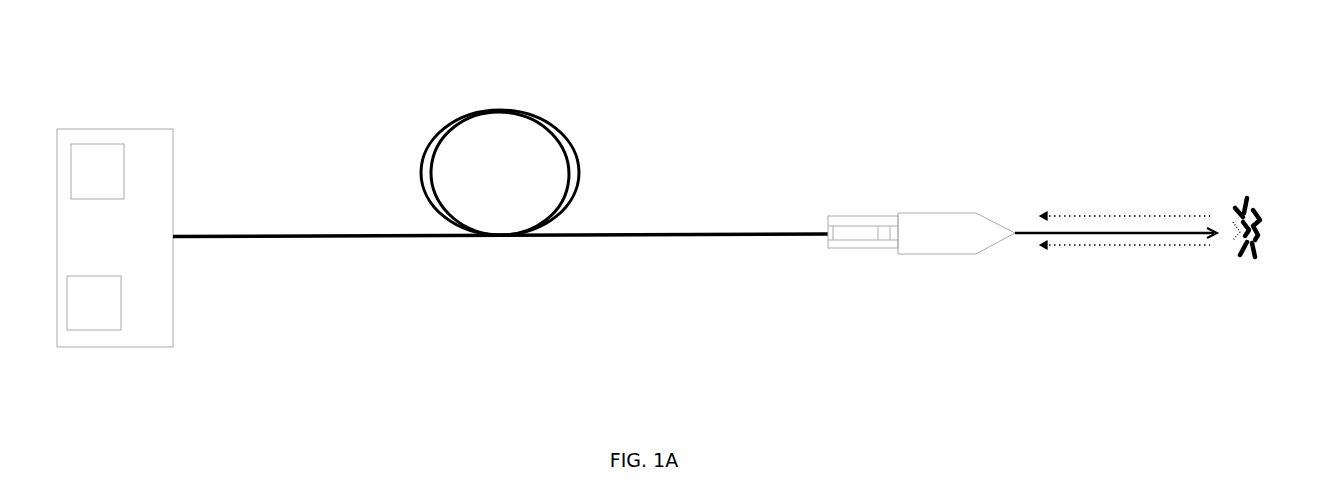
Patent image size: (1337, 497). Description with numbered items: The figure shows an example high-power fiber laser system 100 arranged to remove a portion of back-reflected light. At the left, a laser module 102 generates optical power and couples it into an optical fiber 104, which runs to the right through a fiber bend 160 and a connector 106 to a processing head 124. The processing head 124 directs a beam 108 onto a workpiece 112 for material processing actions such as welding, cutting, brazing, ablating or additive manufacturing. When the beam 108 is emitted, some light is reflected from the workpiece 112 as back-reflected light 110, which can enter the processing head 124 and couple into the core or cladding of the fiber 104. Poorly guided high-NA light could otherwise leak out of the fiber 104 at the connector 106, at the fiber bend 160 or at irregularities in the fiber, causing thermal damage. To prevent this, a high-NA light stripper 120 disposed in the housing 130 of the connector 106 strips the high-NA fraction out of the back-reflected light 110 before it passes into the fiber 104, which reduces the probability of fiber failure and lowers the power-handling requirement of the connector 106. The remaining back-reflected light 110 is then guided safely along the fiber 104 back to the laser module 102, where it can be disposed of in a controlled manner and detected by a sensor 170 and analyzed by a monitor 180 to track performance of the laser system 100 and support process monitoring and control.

The high-power fiber laser system 100 is at (236, 93).
The laser module 102 is at (97, 248).
The optical fiber 104 is at (686, 198).
The connector 106 is at (868, 215).
The beam 108 is at (1140, 232).
The back-reflected light 110 is at (1083, 208).
The workpiece 112 is at (1232, 198).
The high-NA light stripper 120 is at (882, 237).
The processing head 124 is at (968, 253).
The housing 130 is at (850, 250).
The fiber bend 160 is at (420, 135).
The sensor 170 is at (80, 182).
The monitor 180 is at (77, 313).